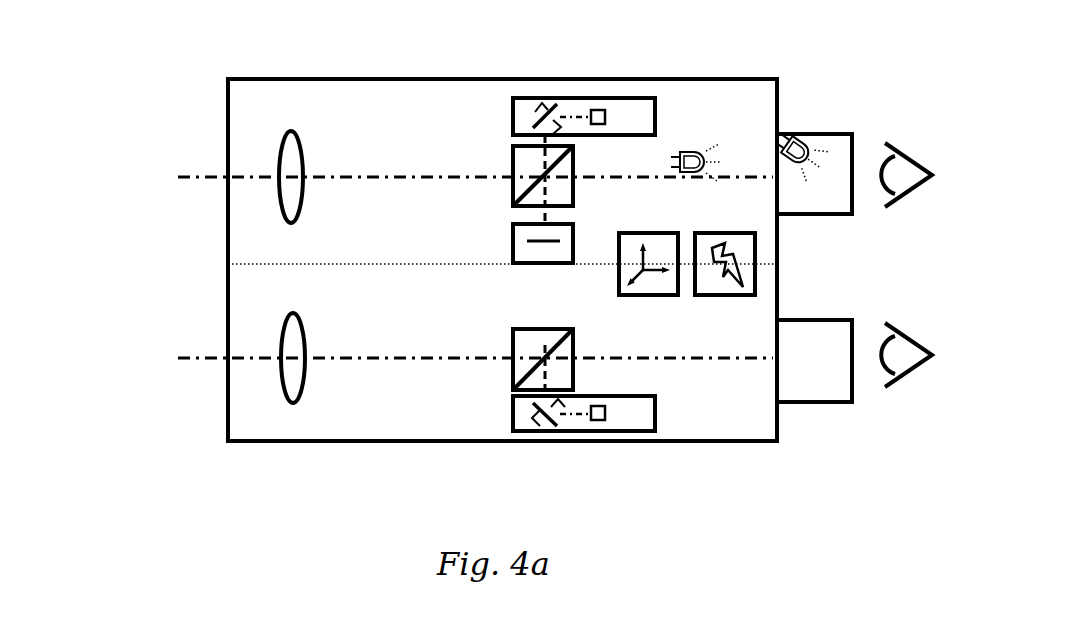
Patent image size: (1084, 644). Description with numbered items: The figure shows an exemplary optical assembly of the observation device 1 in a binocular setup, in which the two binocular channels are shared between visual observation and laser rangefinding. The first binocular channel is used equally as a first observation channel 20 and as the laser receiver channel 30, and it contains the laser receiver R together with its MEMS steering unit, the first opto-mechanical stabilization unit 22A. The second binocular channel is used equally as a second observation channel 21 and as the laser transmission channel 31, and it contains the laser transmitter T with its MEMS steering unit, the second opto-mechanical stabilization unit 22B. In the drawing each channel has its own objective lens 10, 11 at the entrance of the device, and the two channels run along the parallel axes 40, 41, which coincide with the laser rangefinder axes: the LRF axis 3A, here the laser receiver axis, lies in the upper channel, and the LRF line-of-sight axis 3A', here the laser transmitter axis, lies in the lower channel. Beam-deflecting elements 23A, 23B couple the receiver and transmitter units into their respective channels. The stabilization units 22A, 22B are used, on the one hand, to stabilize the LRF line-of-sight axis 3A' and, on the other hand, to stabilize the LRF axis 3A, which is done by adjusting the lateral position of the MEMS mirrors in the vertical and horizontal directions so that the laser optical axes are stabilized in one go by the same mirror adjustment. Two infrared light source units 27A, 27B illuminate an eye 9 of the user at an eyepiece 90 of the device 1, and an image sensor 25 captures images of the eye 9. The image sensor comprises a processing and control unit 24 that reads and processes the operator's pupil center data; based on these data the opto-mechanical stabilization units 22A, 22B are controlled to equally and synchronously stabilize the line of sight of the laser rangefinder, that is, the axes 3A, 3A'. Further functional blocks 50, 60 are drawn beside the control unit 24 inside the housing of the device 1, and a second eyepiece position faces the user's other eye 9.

The observation device 1 is at (497, 231).
The eye 9 is at (917, 243).
The objective lens of first channel 10 is at (329, 135).
The objective lens of second channel 11 is at (334, 397).
The first observation channel 20 is at (171, 112).
The laser receiver channel 30 is at (171, 112).
The second observation channel 21 is at (162, 429).
The laser transmission channel 31 is at (162, 429).
The first optical axis 40 is at (415, 200).
The LRF axis 3A is at (415, 200).
The second optical axis 41 is at (415, 332).
The LRF line-of-sight axis 3A' is at (415, 332).
The first opto-mechanical stabilization unit 22A is at (594, 84).
The second opto-mechanical stabilization unit 22B is at (611, 449).
The first beam deflecting element 23A is at (503, 86).
The second beam deflecting element 23B is at (499, 448).
The processing and control unit 24 is at (511, 269).
The image sensor 25 is at (492, 229).
The infrared light source unit 27A is at (733, 110).
The infrared light source unit 27B is at (839, 200).
The power supply unit 50 is at (783, 340).
The orientation sensor unit 60 is at (745, 363).
The eyepiece 90 is at (824, 151).